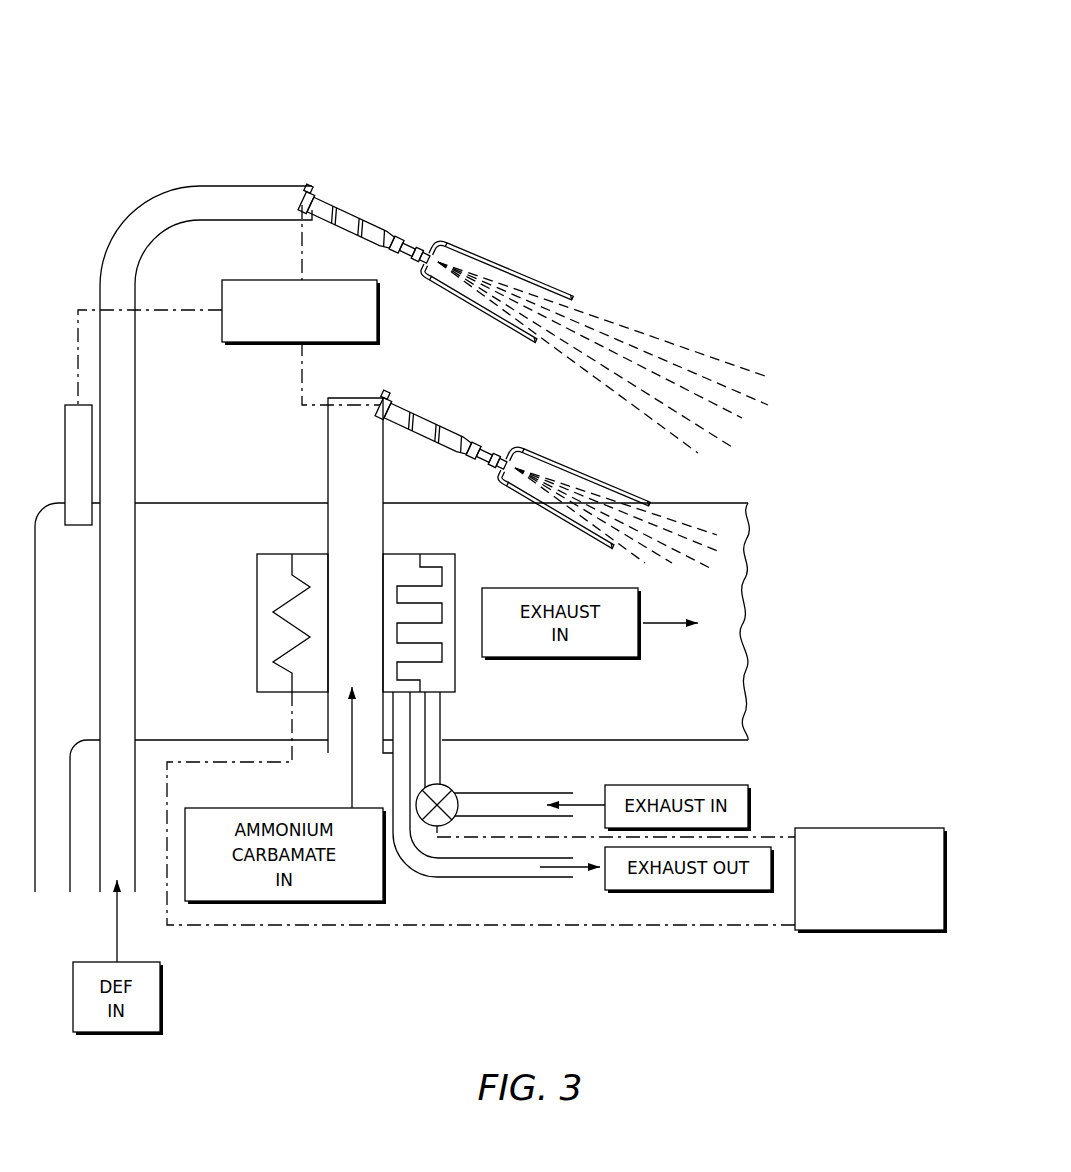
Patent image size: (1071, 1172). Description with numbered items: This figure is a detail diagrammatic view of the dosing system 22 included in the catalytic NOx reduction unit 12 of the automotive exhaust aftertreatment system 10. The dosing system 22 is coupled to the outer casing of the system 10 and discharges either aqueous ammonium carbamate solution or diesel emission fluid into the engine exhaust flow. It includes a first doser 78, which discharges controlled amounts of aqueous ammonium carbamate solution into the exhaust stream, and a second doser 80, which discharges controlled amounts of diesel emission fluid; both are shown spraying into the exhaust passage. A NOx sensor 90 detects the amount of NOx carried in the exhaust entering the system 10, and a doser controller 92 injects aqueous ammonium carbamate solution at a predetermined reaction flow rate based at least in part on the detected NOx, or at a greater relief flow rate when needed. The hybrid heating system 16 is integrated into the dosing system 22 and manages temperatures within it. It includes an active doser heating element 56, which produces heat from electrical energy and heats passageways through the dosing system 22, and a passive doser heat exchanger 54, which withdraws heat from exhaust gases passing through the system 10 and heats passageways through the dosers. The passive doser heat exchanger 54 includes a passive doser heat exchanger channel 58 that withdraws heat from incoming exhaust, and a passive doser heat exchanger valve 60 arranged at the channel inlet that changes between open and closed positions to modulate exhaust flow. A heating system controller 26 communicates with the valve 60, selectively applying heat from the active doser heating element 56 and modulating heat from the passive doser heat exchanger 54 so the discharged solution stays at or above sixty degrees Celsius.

The automotive exhaust aftertreatment system 10 is at (168, 97).
The catalytic NOx reduction unit 12 is at (547, 93).
The dosing system 22 is at (43, 412).
The second doser 80 is at (353, 222).
The first doser 78 is at (463, 436).
The NOx sensor 90 is at (273, 280).
The doser controller 92 is at (65, 465).
The hybrid heating system 16 is at (485, 528).
The active doser heating element 56 is at (278, 554).
The passive doser heat exchanger channel 58 is at (455, 678).
The passive doser heat exchanger valve 60 is at (457, 785).
The passive doser heat exchanger 54 is at (525, 770).
The heating system controller 26 is at (868, 828).